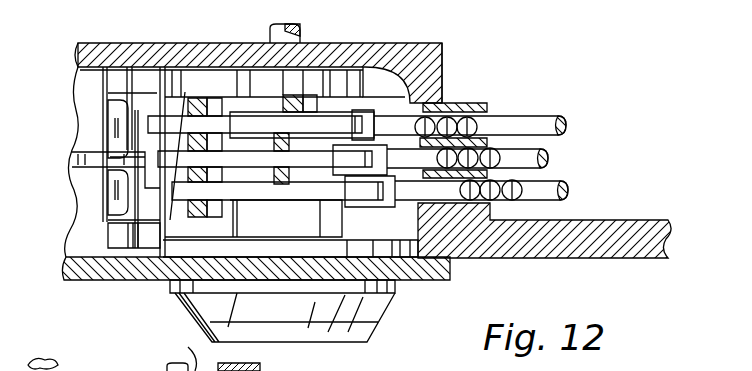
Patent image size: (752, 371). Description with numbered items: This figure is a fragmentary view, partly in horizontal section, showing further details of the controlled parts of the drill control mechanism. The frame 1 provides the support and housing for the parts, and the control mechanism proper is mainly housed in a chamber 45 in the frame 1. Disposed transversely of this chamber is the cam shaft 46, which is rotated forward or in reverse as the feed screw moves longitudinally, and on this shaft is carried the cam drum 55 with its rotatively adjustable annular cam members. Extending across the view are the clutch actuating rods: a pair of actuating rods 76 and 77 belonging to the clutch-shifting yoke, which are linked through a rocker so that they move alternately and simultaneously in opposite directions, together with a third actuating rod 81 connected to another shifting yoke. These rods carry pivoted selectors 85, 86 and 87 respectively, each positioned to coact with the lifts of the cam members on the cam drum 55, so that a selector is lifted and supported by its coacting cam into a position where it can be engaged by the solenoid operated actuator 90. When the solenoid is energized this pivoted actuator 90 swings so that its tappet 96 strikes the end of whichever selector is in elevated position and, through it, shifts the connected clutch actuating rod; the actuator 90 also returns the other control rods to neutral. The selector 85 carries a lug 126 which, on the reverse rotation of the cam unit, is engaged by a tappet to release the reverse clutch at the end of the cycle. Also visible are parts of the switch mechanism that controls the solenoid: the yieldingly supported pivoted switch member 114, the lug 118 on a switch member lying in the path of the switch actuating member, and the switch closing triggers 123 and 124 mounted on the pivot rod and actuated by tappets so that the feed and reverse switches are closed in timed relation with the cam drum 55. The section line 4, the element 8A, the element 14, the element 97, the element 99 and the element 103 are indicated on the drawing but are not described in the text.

The frame 1 is at (400, 53).
The section line 4- 4 is at (72, 158).
The ball bearings 8A is at (493, 157).
The chamber 14 is at (393, 78).
The chamber 45 is at (443, 67).
The cam shaft 46 is at (293, 38).
The cam drum 55 is at (358, 223).
The actuating rod 76 is at (538, 125).
The actuating rod 77 is at (560, 182).
The third actuating rod 81 is at (537, 155).
The selector 85 is at (237, 132).
The selector 86 is at (300, 193).
The selector 87 is at (237, 165).
The solenoid operated actuator 90 is at (147, 197).
The tappet 96 is at (128, 123).
The upper clip 97 is at (98, 157).
The member 99 is at (162, 361).
The member 103 is at (178, 353).
The pivoted switch member 114 is at (170, 75).
The lug 118 is at (290, 98).
The switch closing trigger 123 is at (278, 182).
The switch closing trigger 124 is at (273, 137).
The lug 126 is at (260, 112).